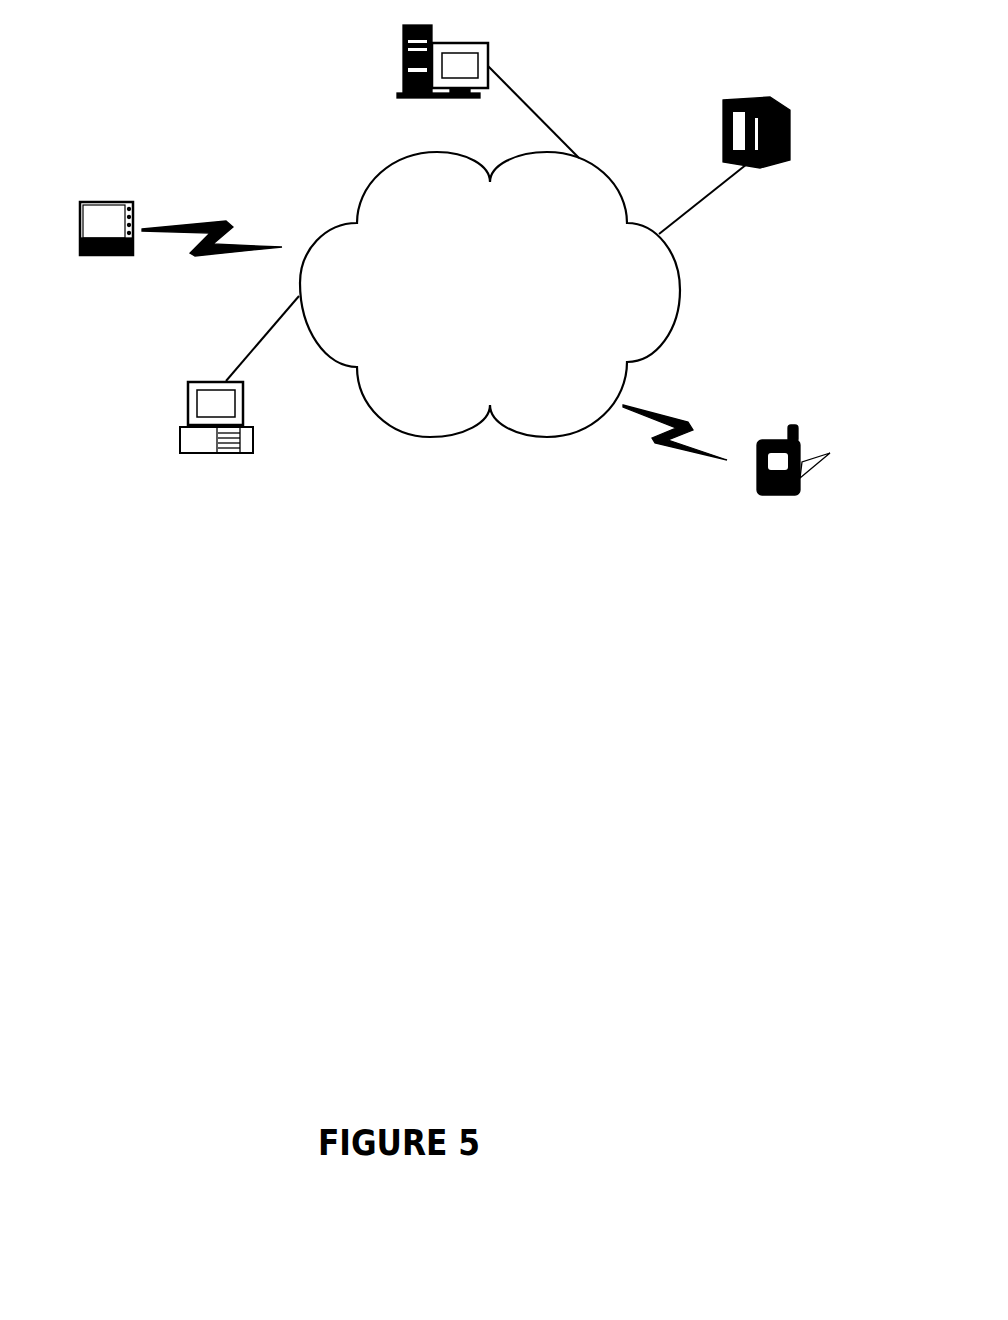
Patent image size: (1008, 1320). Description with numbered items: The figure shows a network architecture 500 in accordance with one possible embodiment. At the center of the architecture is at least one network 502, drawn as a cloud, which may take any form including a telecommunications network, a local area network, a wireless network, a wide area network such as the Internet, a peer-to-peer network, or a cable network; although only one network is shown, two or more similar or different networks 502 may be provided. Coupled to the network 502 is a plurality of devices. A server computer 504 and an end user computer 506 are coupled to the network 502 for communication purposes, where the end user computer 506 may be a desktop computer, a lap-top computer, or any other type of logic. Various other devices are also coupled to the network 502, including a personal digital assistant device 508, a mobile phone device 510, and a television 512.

The network architecture 500 is at (400, 723).
The network 502 is at (547, 436).
The server computer 504 is at (403, 62).
The end user computer 506 is at (180, 437).
The personal digital assistant (PDA) device 508 is at (107, 202).
The mobile phone device 510 is at (757, 442).
The television 512 is at (737, 92).